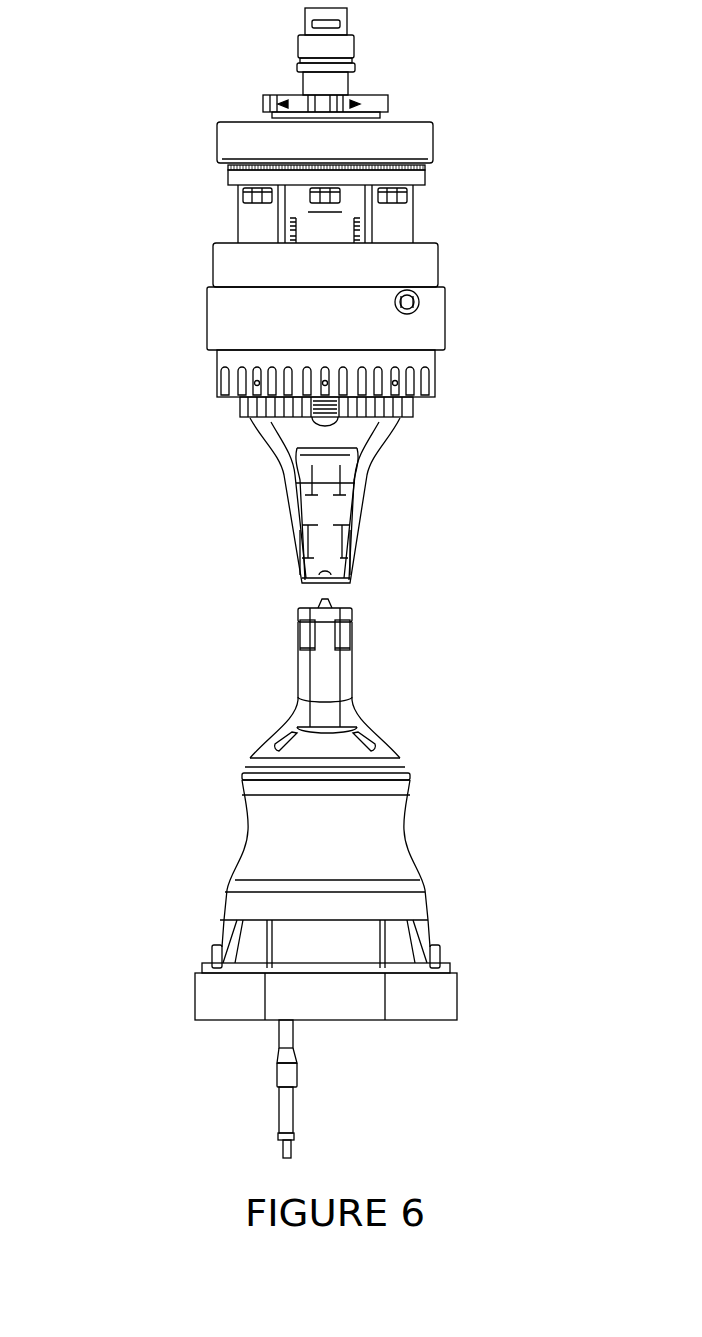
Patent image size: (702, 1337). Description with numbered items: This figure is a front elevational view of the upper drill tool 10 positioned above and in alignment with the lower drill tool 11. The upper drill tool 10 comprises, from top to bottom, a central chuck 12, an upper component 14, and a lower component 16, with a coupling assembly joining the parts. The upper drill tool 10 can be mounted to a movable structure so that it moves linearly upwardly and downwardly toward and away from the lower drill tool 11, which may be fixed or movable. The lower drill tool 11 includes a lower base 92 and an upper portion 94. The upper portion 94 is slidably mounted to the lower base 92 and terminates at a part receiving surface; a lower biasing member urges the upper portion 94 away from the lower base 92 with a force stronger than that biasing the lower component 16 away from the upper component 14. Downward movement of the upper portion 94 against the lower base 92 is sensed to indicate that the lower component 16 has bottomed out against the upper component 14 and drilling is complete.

The central chuck 12 is at (147, 142).
The upper component 14 is at (470, 305).
The upper drill tool 10 is at (460, 385).
The lower component 16 is at (238, 445).
The upper portion 94 is at (417, 702).
The lower drill tool 11 is at (165, 908).
The lower base 92 is at (165, 990).